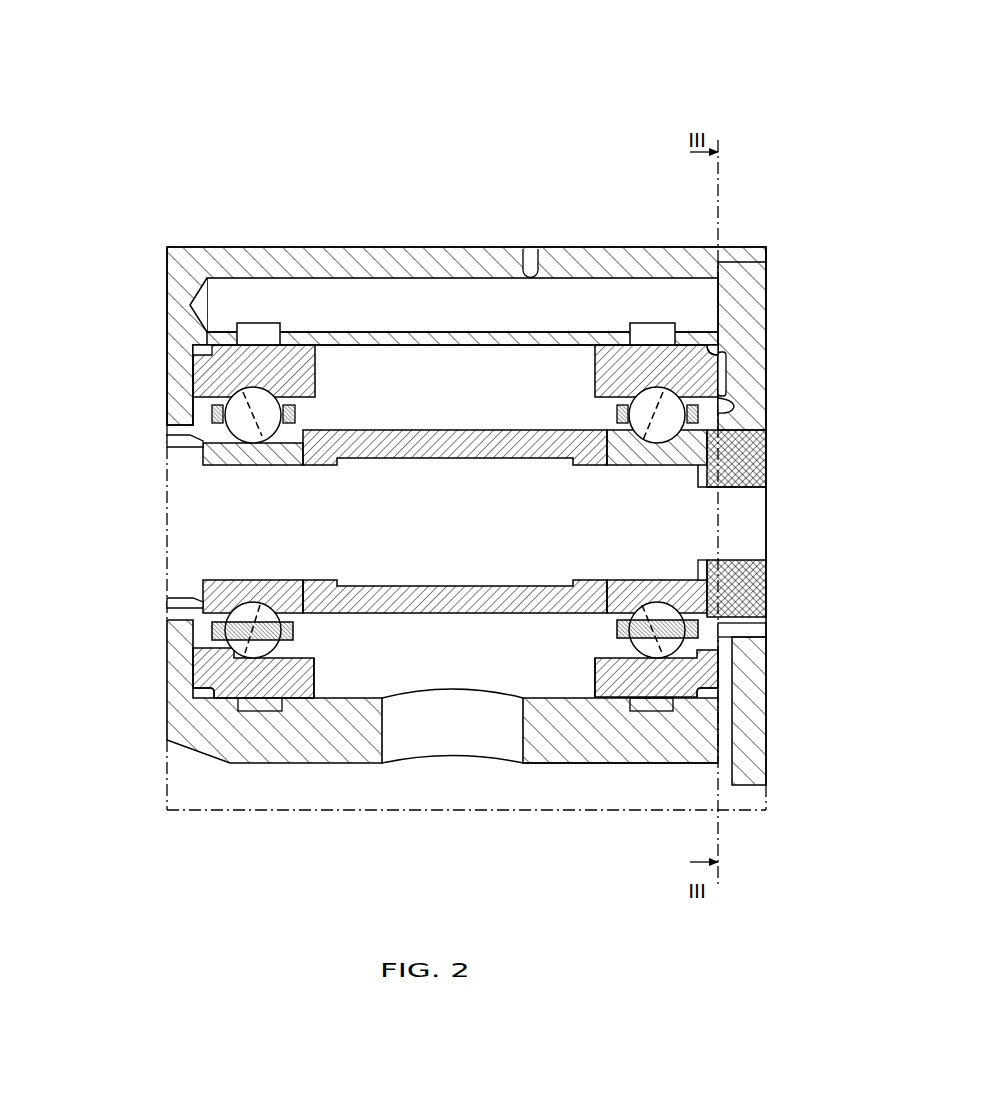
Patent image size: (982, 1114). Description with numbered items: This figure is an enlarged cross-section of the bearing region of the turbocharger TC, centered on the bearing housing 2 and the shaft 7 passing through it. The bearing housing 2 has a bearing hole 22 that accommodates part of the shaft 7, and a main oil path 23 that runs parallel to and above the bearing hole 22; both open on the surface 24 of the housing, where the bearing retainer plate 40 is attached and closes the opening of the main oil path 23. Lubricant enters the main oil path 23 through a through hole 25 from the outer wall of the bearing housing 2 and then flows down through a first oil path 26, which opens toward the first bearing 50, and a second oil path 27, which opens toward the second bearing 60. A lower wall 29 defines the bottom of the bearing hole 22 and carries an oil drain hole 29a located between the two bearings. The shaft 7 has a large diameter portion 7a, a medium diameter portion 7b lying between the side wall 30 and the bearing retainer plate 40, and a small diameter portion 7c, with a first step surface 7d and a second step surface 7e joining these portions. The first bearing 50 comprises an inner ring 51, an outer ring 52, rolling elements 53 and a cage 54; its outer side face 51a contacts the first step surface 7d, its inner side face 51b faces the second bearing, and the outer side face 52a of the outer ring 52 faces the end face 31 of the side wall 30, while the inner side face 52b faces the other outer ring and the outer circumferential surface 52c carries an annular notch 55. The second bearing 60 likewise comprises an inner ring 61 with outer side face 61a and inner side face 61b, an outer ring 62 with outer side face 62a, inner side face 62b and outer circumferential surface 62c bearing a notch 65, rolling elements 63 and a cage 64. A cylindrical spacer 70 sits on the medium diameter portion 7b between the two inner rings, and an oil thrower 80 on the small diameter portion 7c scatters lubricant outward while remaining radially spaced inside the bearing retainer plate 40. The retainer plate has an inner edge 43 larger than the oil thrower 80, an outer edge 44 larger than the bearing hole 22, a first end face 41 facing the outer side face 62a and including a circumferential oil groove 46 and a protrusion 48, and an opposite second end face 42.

The torque converter assembly TC is at (78, 62).
The bearing housing 2 is at (185, 748).
The shaft 7 is at (458, 531).
The large diameter portion 7a is at (176, 531).
The medium diameter portion 7b is at (489, 531).
The small diameter portion 7c is at (724, 531).
The first step surface 7d is at (213, 470).
The second step surface 7e is at (766, 480).
The bearing hole 22 is at (439, 394).
The main oil path 23 is at (384, 316).
The surface 24 is at (718, 335).
The through hole 25 is at (530, 250).
The first oil path 26 is at (275, 325).
The second oil path 27 is at (650, 323).
The lower wall 29 is at (530, 748).
The oil drain hole 29a is at (431, 739).
The side wall 30 is at (178, 398).
The end face 31 is at (197, 441).
The bearing retainer plate 40 is at (765, 360).
The first end face 41 is at (718, 293).
The second end face 42 is at (767, 280).
The inner edge 43 is at (762, 626).
The outer edge 44 is at (746, 790).
The circumferential oil groove 46 is at (724, 398).
The protrusion 48 is at (732, 406).
The first bearing 50 is at (244, 680).
The inner ring 51 is at (262, 580).
The outer side face 51a is at (198, 603).
The inner side face 51b is at (305, 578).
The outer ring 52 is at (300, 683).
The outer side face 52a is at (205, 692).
The inner side face 52b is at (316, 672).
The outer circumferential surface 52c is at (290, 702).
The rolling elements 53 is at (228, 632).
The cage 54 is at (216, 640).
The notch 55 is at (197, 345).
The second bearing 60 is at (675, 682).
The inner ring 61 is at (650, 580).
The outer side face 61a is at (725, 592).
The inner side face 61b is at (600, 580).
The outer ring 62 is at (610, 683).
The outer side face 62a is at (764, 745).
The inner side face 62b is at (594, 672).
The outer circumferential surface 62c is at (622, 702).
The rolling elements 63 is at (738, 645).
The cage 64 is at (740, 672).
The notch 65 is at (707, 340).
The spacer 70 is at (498, 615).
The oil thrower 80 is at (740, 458).